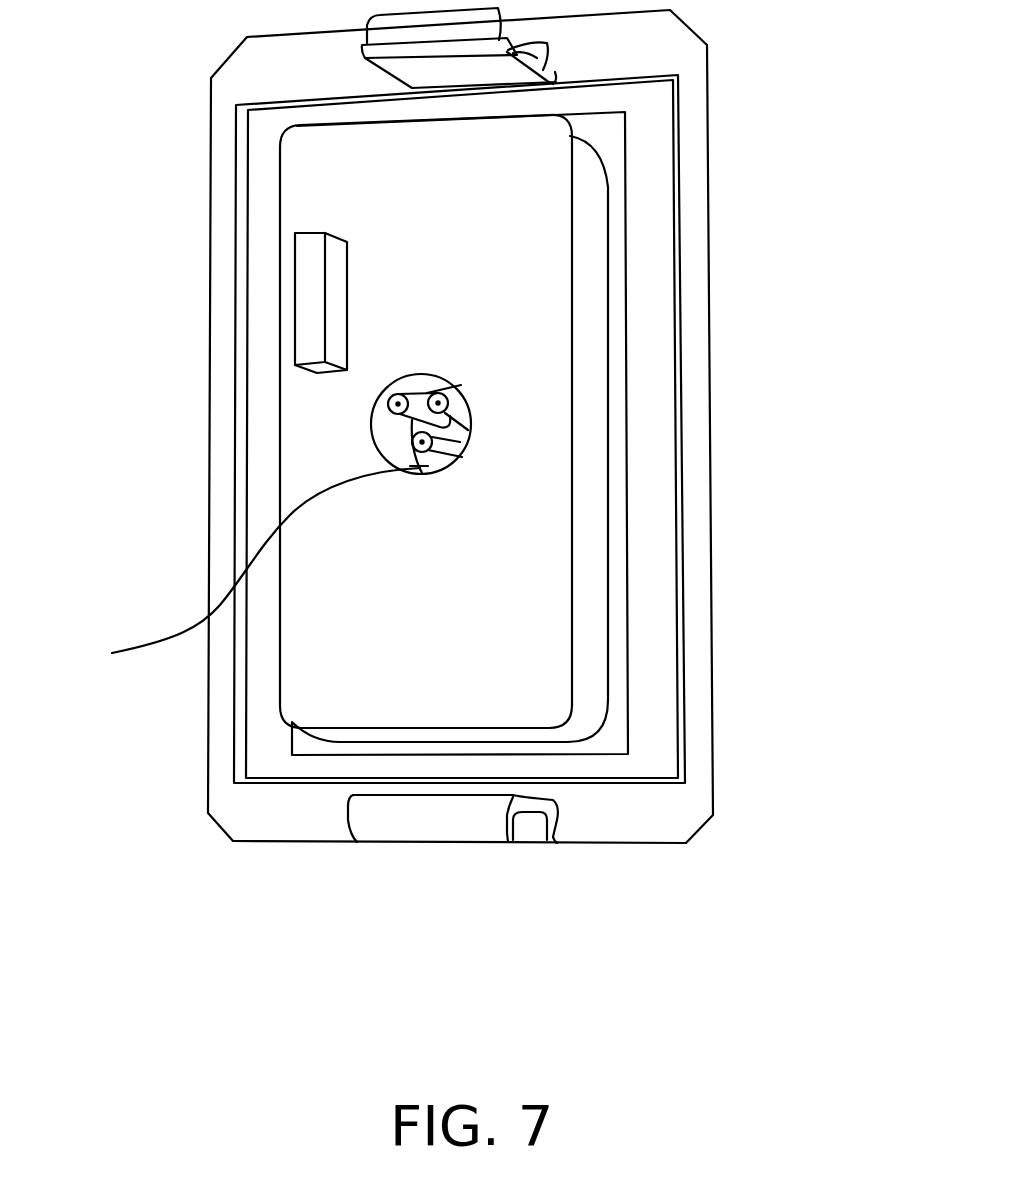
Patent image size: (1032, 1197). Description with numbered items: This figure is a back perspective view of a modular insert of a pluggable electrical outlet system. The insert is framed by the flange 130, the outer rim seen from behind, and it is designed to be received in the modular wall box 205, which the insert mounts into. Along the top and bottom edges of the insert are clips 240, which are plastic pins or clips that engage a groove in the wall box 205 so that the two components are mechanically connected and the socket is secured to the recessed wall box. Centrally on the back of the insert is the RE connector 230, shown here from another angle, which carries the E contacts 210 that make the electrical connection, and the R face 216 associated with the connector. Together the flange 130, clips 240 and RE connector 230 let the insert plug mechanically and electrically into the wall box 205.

The flange 130 is at (243, 803).
The modular wall box 205 is at (768, 428).
The E contacts 210 is at (395, 405).
The R face 216 is at (219, 575).
The RE connector 230 is at (493, 375).
The clip 240 is at (480, 20).